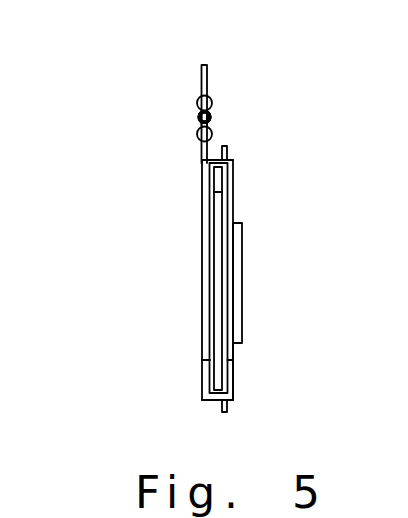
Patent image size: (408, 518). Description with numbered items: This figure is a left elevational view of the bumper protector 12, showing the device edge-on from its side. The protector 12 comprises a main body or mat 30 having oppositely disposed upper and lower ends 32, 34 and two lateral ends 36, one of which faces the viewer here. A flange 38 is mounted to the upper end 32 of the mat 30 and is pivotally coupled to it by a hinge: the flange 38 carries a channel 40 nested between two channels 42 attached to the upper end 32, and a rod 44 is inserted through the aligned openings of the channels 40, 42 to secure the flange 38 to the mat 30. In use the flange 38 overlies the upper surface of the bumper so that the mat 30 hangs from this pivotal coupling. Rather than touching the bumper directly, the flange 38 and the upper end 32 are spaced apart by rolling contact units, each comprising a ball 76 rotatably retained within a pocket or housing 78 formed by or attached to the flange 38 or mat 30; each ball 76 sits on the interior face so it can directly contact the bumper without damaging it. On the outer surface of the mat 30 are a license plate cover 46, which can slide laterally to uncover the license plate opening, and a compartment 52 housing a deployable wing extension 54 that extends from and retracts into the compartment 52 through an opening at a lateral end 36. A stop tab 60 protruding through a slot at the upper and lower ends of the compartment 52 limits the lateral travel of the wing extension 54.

The bumper protector 12 is at (44, 75).
The mat 30 is at (202, 237).
The upper end 32 is at (233, 161).
The lower end 34 is at (203, 402).
The lateral ends 36 is at (233, 353).
The flange 38 is at (201, 80).
The channel 40 is at (210, 115).
The channels 42 is at (268, 98).
The rod 44 is at (284, 98).
The license plate cover 46 is at (242, 278).
The compartment 52 is at (234, 207).
The wing extension 54 is at (214, 304).
The stop tab 60 is at (227, 147).
The ball 76 is at (197, 104).
The housing 78 is at (209, 112).